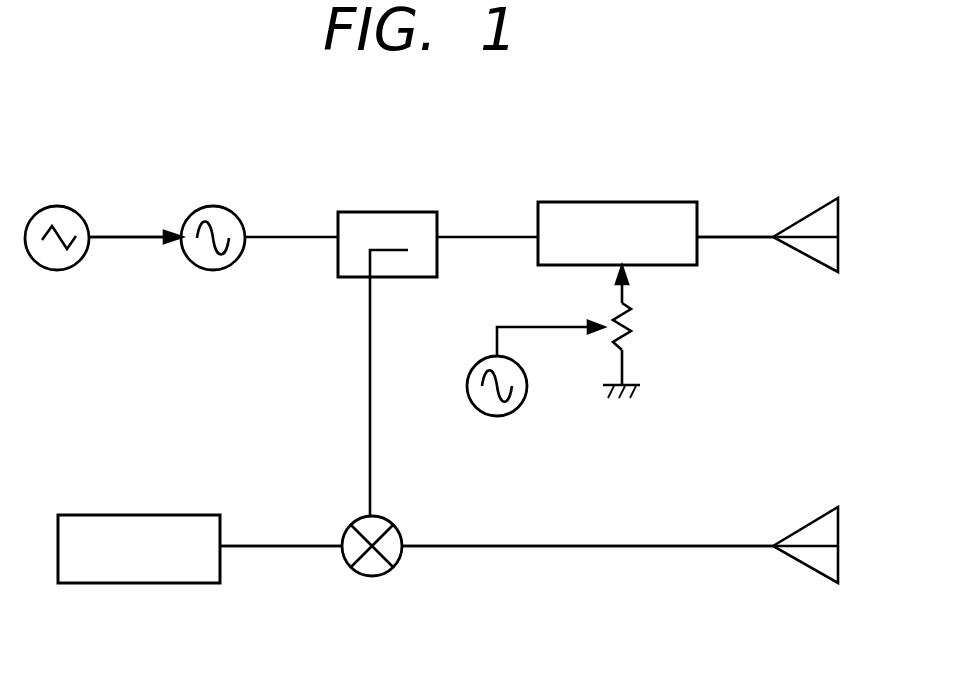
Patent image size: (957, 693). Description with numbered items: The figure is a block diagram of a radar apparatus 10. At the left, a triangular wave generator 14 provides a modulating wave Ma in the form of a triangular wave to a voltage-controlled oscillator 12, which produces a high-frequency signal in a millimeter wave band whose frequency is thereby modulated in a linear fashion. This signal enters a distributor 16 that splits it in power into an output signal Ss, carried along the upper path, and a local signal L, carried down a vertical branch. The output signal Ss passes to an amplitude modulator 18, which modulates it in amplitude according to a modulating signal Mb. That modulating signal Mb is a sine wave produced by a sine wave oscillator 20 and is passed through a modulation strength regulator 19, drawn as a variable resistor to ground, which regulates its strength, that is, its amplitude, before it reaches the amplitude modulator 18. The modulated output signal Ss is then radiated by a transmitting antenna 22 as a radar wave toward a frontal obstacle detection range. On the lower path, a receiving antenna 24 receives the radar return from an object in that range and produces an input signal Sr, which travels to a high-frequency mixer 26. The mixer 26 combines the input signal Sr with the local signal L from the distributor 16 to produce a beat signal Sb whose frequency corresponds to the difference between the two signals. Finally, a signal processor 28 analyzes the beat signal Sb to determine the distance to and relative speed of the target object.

The radar apparatus 10 is at (664, 156).
The voltage-controlled oscillator 12 is at (218, 207).
The triangular wave generator 14 is at (60, 207).
The distributor 16 is at (391, 212).
The amplitude modulator 18 is at (568, 202).
The modulation strength regulator 19 is at (634, 328).
The sine wave oscillator 20 is at (470, 375).
The transmitting antenna 22 is at (813, 212).
The receiving antenna 24 is at (812, 522).
The high-frequency mixer 26 is at (387, 518).
The signal processor 28 is at (135, 515).
The modulating wave Ma is at (125, 240).
The modulating signal Mb is at (533, 326).
The output signal Ss is at (737, 235).
The beat signal Sb is at (278, 552).
The input signal Sr is at (627, 548).
The local signal L is at (368, 389).